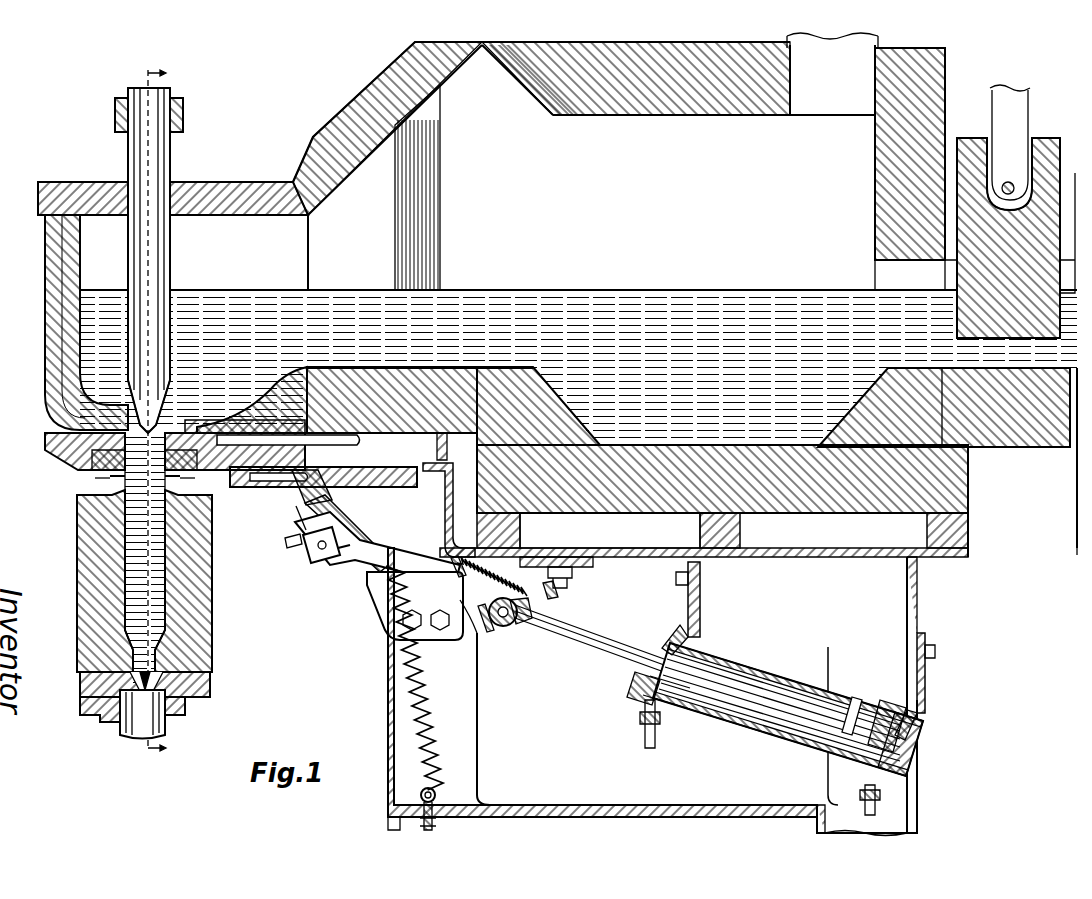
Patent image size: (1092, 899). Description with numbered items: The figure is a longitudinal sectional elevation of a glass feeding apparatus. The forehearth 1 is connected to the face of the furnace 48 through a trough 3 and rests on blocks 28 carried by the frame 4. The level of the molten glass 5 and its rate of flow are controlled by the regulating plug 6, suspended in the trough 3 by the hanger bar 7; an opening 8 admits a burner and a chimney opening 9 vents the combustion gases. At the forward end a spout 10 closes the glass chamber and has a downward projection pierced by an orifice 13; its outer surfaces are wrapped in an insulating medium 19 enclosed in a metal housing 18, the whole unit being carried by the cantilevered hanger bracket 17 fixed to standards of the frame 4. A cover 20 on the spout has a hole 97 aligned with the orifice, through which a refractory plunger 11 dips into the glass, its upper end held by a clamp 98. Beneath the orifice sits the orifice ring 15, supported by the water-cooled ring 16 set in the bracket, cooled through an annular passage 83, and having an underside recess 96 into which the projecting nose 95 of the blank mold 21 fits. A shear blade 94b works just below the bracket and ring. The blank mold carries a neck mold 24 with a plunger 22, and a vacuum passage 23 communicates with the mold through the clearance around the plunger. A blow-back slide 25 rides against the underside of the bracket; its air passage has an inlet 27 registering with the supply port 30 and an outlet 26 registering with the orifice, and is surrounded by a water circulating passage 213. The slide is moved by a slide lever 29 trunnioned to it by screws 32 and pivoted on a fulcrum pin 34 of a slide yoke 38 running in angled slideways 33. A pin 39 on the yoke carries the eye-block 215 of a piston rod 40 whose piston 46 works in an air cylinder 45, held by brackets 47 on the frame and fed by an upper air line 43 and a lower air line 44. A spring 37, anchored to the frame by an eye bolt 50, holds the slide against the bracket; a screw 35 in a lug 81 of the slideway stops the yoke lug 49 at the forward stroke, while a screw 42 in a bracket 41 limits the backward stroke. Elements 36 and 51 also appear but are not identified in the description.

The forehearth 1 is at (365, 92).
The trough 3 is at (1012, 432).
The frame 4 is at (505, 808).
The molten glass 5 is at (598, 292).
The regulating plug 6 is at (968, 137).
The hanger bar 7 is at (1020, 116).
The opening 8 is at (533, 100).
The chimney opening 9 is at (815, 105).
The spout 10 is at (78, 272).
The refractory plunger 11 is at (170, 268).
The orifice 13 is at (165, 410).
The orifice ring 15 is at (95, 458).
The water-cooled ring 16 is at (105, 482).
The hanger bracket 17 is at (50, 440).
The metal housing 18 is at (46, 350).
The insulating medium 19 is at (46, 292).
The cover 20 is at (68, 184).
The blank mold 21 is at (205, 598).
The plunger 22 is at (165, 732).
The vacuum passage 23 is at (122, 734).
The neck mold 24 is at (200, 692).
The blow-back slide 25 is at (252, 488).
The outlet 26 is at (332, 490).
The inlet 27 is at (410, 470).
The blocks 28 is at (610, 530).
The slide lever 29 is at (368, 592).
The supply port 30 is at (262, 460).
The screws 32 is at (300, 512).
The slideways 33 is at (348, 528).
The fulcrum pin 34 is at (348, 580).
The screw 35 is at (342, 565).
The bracket plate 36 is at (430, 640).
The spring 37 is at (400, 703).
The slide yoke 38 is at (478, 642).
The pin 39 is at (517, 630).
The piston rod 40 is at (607, 660).
The bracket 41 is at (596, 573).
The screw 42 is at (556, 597).
The air line 43 is at (655, 740).
The air line 44 is at (880, 810).
The air cylinder 45 is at (792, 745).
The piston 46 is at (852, 705).
The brackets 47 is at (688, 602).
The furnace 48 is at (1062, 490).
The lug 49 is at (485, 622).
The eye bolt 50 is at (436, 793).
The bore 51 is at (175, 636).
The lug 81 is at (312, 562).
The annular passage 83 is at (195, 427).
The projecting nose 95 is at (126, 566).
The recess 96 is at (115, 480).
The hole 97 is at (125, 190).
The clamp 98 is at (178, 133).
The water circulating passage 213 is at (286, 503).
The eye-block 215 is at (520, 617).
The shear blade 94b is at (178, 480).